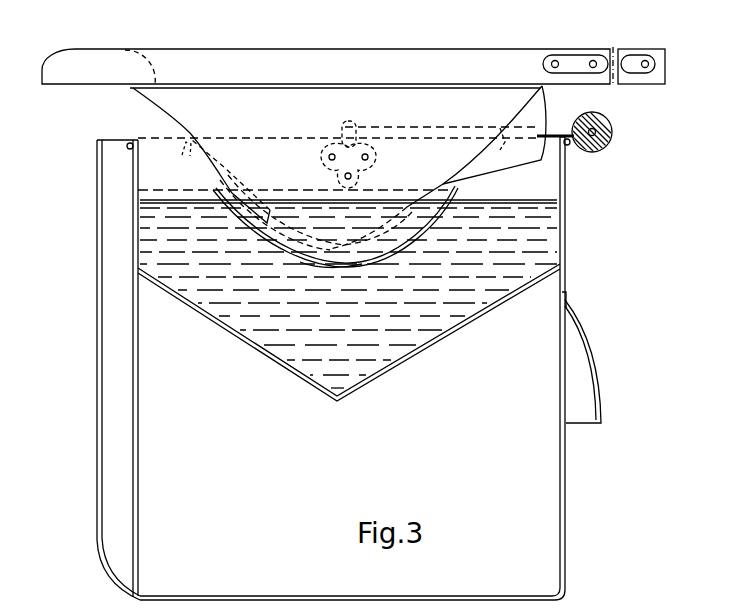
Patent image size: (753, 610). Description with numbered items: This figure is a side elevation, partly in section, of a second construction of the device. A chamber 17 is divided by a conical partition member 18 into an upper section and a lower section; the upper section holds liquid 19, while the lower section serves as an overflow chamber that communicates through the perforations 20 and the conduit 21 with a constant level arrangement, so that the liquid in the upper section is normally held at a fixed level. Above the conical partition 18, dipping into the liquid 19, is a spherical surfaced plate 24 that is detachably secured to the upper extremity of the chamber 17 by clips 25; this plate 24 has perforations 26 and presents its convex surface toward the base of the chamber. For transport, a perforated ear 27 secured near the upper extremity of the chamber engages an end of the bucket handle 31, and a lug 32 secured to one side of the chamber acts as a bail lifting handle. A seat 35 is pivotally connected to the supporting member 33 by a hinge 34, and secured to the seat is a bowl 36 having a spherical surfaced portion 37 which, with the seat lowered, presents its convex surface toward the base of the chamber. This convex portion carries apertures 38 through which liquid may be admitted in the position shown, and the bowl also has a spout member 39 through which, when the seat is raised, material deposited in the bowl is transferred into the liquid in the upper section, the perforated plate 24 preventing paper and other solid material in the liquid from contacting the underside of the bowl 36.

The chamber 17 is at (566, 495).
The partition member 18 is at (392, 367).
The liquid 19 is at (523, 227).
The perforations 20 is at (138, 400).
The conduit 21 is at (97, 402).
The spherical surfaced plate 24 is at (317, 268).
The clips 25 is at (187, 146).
The perforations 26 is at (428, 232).
The perforated ear 27 is at (335, 128).
The bucket handle 31 is at (586, 128).
The lug 32 is at (602, 395).
The supporting member 33 is at (657, 80).
The hinge 34 is at (639, 72).
The seat 35 is at (87, 80).
The bowl 36 is at (158, 108).
The spherical surfaced portion 37 is at (376, 230).
The apertures 38 is at (273, 227).
The spout member 39 is at (533, 157).